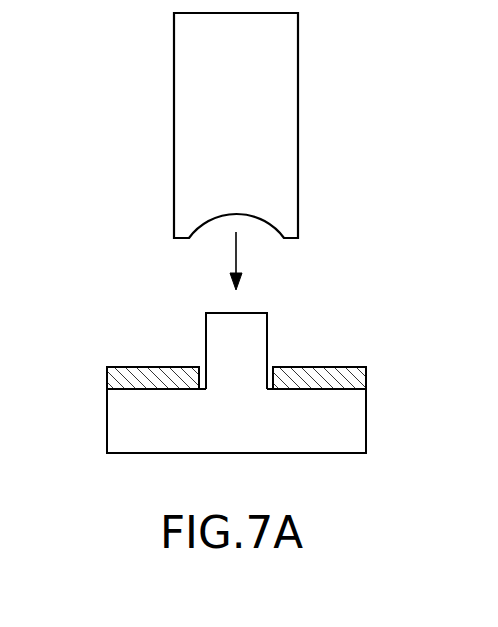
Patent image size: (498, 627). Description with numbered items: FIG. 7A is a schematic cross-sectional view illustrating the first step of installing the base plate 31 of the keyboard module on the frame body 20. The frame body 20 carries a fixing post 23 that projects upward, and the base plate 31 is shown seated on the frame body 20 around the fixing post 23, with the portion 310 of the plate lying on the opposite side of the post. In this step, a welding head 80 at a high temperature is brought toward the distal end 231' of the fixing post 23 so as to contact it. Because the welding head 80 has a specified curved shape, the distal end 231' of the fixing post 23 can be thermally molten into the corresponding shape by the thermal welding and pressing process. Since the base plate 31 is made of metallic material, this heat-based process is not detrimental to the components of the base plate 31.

The welding head 80 is at (285, 103).
The frame body 20 is at (120, 432).
The patterned layer portion 310 is at (202, 373).
The base plate 31 is at (338, 375).
The fixing post 23 is at (248, 378).
The distal end 231' is at (202, 331).